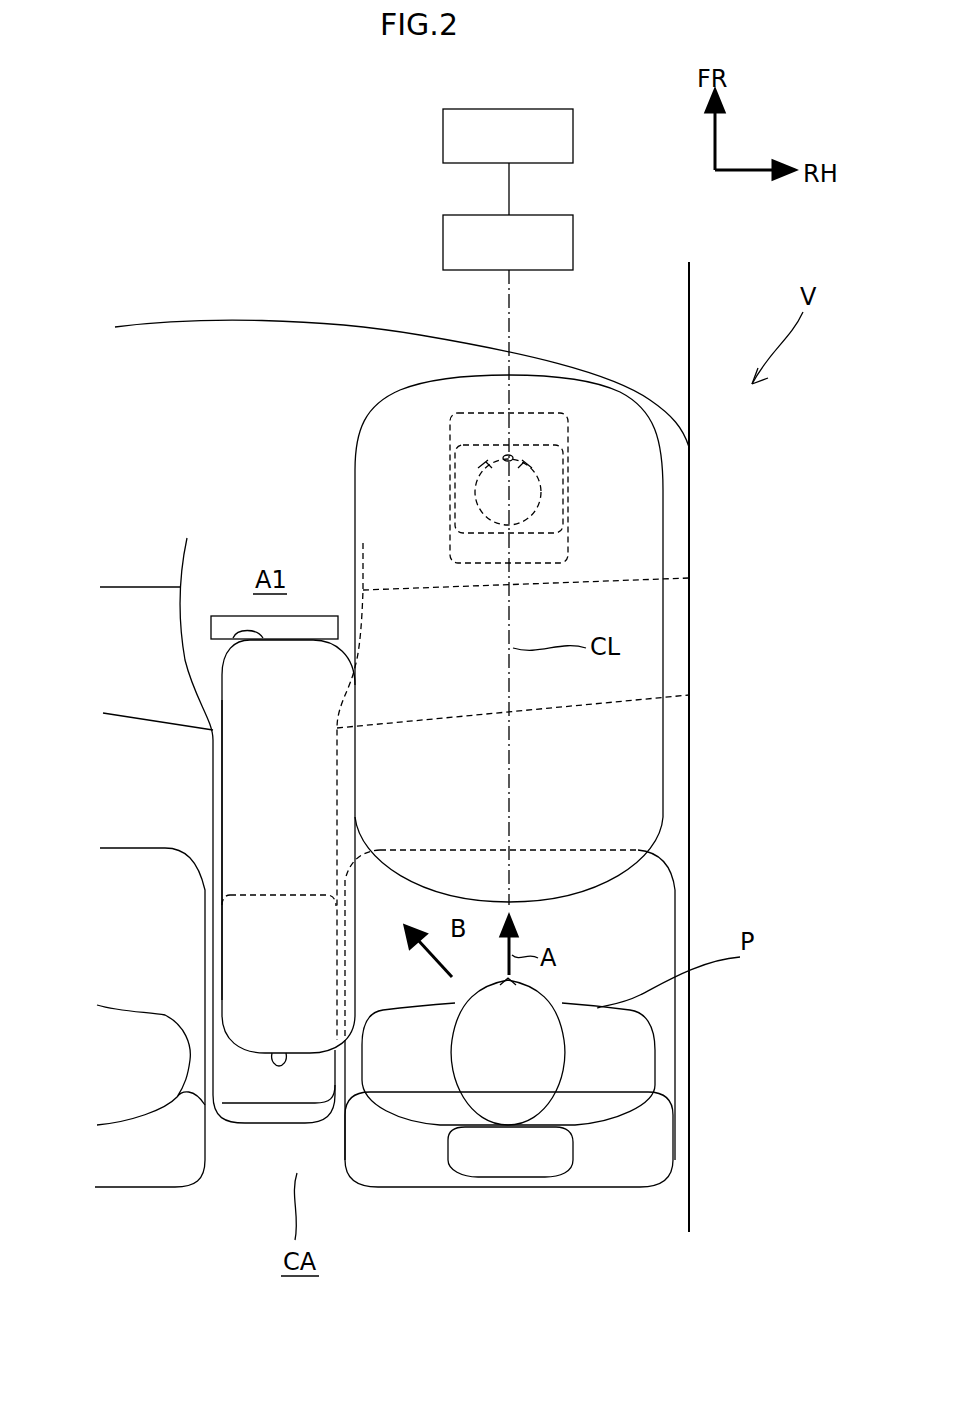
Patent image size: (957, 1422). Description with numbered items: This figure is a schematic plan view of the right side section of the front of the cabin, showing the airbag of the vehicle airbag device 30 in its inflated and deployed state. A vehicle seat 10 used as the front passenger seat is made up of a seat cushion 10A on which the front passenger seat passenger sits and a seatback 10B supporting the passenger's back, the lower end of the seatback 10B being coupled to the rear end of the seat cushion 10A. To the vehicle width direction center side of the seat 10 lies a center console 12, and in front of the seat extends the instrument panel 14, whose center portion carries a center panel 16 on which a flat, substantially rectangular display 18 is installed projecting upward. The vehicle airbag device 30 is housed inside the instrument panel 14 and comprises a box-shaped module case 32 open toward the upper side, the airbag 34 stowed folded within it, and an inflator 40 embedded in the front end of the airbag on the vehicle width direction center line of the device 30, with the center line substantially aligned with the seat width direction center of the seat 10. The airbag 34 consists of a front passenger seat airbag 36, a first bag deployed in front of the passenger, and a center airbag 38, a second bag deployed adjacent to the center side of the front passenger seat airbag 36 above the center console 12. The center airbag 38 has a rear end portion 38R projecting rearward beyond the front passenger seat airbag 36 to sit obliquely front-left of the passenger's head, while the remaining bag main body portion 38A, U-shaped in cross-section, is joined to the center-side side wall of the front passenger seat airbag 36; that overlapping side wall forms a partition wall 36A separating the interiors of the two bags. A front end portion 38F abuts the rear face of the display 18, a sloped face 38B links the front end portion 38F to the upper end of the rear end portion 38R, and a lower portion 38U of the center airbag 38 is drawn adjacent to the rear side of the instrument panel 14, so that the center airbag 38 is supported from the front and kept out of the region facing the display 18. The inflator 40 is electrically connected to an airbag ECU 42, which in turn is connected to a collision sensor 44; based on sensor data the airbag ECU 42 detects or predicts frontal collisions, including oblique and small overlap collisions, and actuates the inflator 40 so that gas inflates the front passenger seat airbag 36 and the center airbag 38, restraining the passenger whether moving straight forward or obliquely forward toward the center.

The vehicle seat 10 is at (576, 1153).
The seat cushion 10A is at (660, 1027).
The seatback 10B is at (513, 1192).
The center console 12 is at (270, 1093).
The instrument panel 14 is at (262, 345).
The center panel 16 is at (197, 563).
The display 18 is at (211, 628).
The vehicle airbag device 30 is at (676, 505).
The module case 32 is at (540, 418).
The airbag 34 is at (270, 460).
The front passenger seat airbag 36 is at (355, 495).
The partition wall 36A is at (355, 770).
The center airbag 38 is at (312, 657).
The bag main body portion 38A is at (220, 803).
The sloped face 38B is at (252, 725).
The front end portion 38F is at (233, 637).
The rear end portion 38R is at (283, 1050).
The lower portion of sub bag 38U is at (240, 955).
The inflator 40 is at (477, 480).
The airbag ECU 42 is at (443, 238).
The collision sensor 44 is at (443, 134).